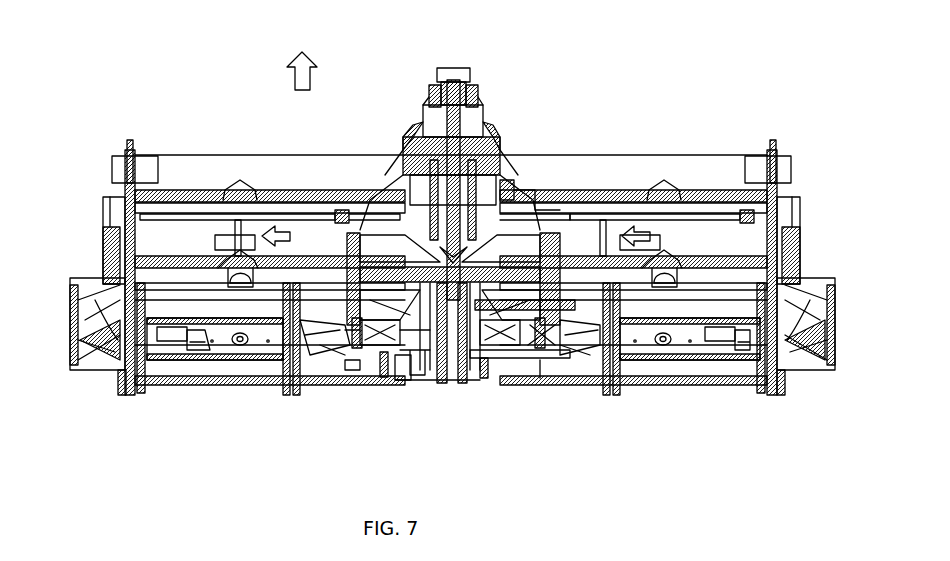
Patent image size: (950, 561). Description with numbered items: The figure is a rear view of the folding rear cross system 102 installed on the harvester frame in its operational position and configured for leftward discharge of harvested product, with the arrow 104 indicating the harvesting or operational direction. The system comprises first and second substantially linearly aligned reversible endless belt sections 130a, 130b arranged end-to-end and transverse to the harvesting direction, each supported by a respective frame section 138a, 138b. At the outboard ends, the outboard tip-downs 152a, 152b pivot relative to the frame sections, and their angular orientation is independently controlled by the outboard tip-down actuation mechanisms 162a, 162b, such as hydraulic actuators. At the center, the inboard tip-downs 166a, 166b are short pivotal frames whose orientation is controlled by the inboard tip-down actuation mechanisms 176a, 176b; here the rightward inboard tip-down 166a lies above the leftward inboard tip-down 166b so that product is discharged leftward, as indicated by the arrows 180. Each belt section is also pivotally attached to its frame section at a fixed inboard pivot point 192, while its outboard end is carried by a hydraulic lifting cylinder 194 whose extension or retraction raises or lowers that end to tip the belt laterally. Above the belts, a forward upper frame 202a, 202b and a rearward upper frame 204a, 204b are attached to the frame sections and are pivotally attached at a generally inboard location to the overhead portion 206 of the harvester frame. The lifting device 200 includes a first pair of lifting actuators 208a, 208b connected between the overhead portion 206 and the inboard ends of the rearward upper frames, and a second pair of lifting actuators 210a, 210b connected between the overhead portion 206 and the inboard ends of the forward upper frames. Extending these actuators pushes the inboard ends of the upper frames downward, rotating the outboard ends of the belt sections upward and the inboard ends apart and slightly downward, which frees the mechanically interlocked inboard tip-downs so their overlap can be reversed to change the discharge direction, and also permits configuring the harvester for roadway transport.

The folding rear cross system 102 is at (136, 45).
The harvesting direction 104 is at (290, 66).
The first reversible endless belt section 130a is at (790, 238).
The second reversible endless belt section 130b is at (238, 300).
The first frame section 138a is at (688, 380).
The second frame section 138b is at (242, 385).
The first outboard tip-down 152a is at (810, 299).
The second outboard tip-down 152b is at (95, 286).
The first outboard tip-down actuation mechanism 162a is at (756, 380).
The second outboard tip-down actuation mechanism 162b is at (152, 376).
The rightward inboard tip-down 166a is at (490, 360).
The leftward inboard tip-down 166b is at (420, 360).
The first inboard tip-down actuation mechanism 176a is at (537, 372).
The second inboard tip-down actuation mechanism 176b is at (375, 365).
The discharge direction arrows 180 is at (278, 232).
The fixed inboard pivot point 192 is at (312, 372).
The hydraulic lifting cylinder 194 is at (112, 372).
The lifting device 200 is at (565, 40).
The first forward upper frame 202a is at (717, 190).
The second forward upper frame 202b is at (178, 196).
The first rearward upper frame 204a is at (590, 298).
The second rearward upper frame 204b is at (222, 295).
The overhead portion of the harvester frame 206 is at (510, 187).
The first lifting actuator of the first pair 208a is at (500, 144).
The second lifting actuator of the first pair 208b is at (412, 138).
The first lifting actuator of the second pair 210a is at (472, 101).
The second lifting actuator of the second pair 210b is at (432, 98).